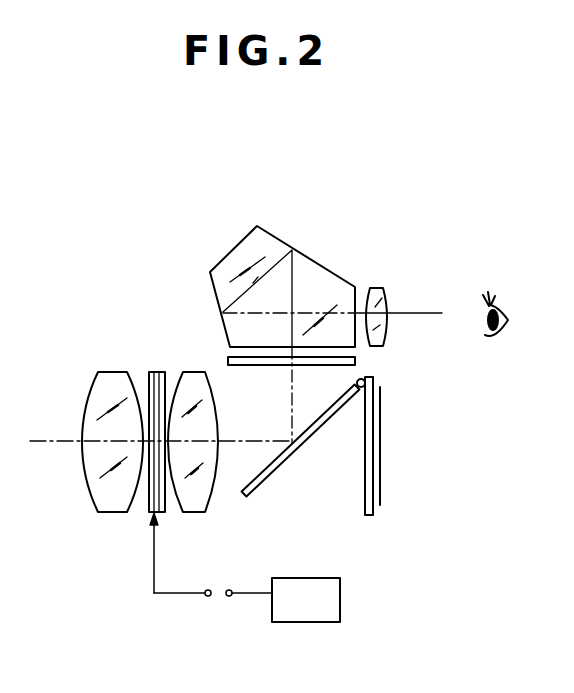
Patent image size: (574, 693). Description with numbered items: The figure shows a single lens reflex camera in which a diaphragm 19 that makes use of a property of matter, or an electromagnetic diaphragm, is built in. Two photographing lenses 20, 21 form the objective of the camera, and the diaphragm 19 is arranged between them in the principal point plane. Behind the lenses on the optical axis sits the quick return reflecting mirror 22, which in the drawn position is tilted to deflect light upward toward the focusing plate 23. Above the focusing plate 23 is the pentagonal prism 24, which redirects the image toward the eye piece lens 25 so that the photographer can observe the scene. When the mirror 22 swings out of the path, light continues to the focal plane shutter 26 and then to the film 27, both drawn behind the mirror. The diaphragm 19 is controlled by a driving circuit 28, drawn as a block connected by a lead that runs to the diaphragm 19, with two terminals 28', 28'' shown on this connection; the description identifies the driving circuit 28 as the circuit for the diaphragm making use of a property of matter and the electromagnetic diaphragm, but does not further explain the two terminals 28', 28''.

The diaphragm 19 is at (153, 372).
The photographing lens 20 is at (97, 487).
The photographing lens 21 is at (193, 502).
The quick return reflecting mirror 22 is at (273, 468).
The focusing plate 23 is at (355, 362).
The pentagonal prism 24 is at (312, 278).
The eye piece lens 25 is at (378, 305).
The focal plane shutter 26 is at (365, 465).
The film 27 is at (381, 467).
The driving circuit 28 is at (306, 600).
The terminal 28' is at (199, 619).
The terminal 28'' is at (241, 619).